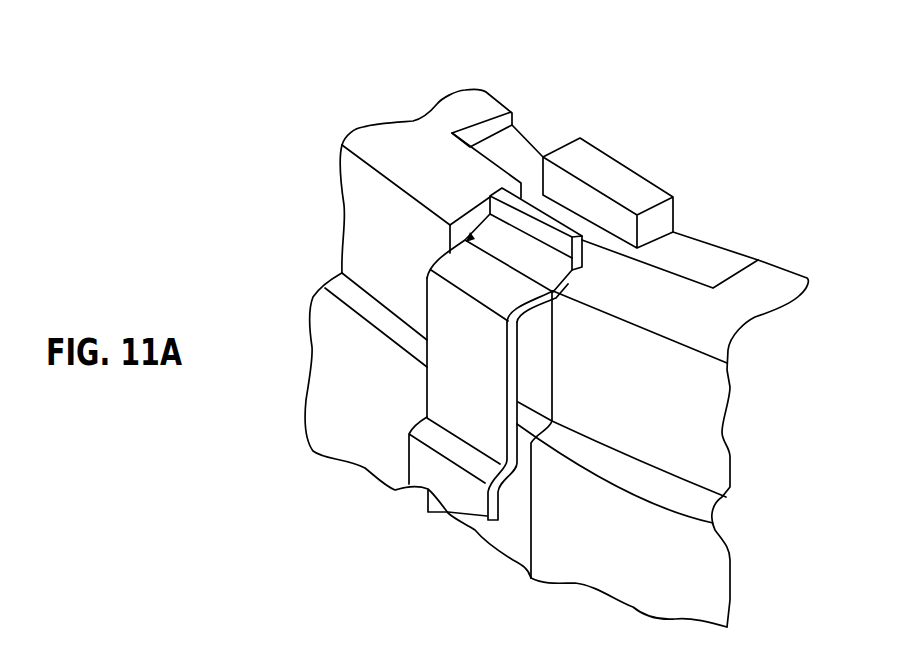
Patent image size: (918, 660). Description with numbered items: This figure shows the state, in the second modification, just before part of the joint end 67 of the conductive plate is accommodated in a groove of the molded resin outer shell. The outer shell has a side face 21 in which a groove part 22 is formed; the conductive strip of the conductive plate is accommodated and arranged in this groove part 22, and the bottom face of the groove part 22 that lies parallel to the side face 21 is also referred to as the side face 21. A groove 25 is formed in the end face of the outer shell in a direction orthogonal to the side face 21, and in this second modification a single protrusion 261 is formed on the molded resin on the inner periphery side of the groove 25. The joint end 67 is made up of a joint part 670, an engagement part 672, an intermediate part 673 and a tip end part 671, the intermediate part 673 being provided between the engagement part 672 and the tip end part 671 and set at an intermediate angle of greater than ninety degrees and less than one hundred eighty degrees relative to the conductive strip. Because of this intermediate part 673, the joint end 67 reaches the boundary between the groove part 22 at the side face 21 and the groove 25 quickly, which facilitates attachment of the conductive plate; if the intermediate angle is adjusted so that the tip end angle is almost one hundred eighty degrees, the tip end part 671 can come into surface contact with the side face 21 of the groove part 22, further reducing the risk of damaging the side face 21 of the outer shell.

The side face 21 is at (332, 357).
The groove part 22 is at (457, 250).
The groove 25 is at (473, 223).
The protrusion 261 is at (602, 162).
The joint end 67 is at (422, 468).
The joint part 670 is at (448, 388).
The tip end part 671 is at (532, 226).
The engagement part 672 is at (465, 277).
The intermediate part 673 is at (550, 262).